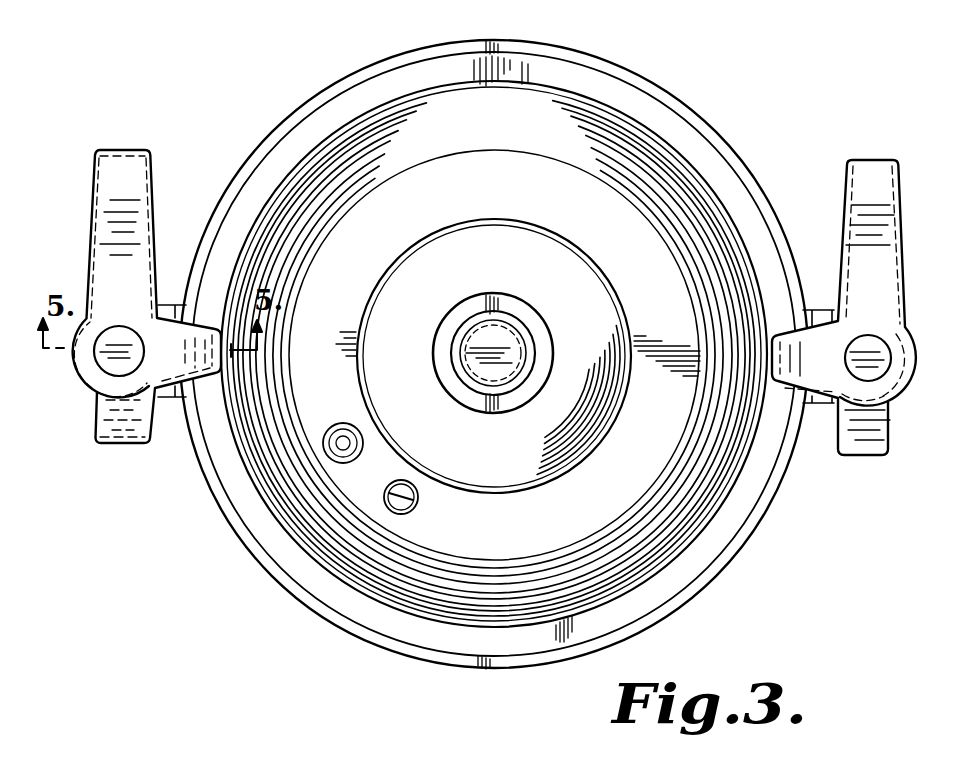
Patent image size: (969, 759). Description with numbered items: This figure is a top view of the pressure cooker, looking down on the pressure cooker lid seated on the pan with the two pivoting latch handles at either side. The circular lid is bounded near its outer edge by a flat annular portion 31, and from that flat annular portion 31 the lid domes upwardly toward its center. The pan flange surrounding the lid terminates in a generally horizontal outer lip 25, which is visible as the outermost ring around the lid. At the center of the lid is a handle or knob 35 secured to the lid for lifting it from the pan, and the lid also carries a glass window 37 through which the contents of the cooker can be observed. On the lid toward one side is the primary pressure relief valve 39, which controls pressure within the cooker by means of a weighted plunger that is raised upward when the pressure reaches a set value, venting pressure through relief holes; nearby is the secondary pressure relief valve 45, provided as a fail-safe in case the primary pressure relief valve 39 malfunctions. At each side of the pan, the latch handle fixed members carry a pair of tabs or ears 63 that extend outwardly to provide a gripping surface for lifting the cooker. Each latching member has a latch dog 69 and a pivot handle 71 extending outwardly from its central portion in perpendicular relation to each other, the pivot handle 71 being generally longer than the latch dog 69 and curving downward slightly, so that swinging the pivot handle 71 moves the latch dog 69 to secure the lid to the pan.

The outer lip 25 is at (640, 72).
The flat annular portion 31 is at (684, 132).
The glass window 37 is at (541, 246).
The handle or knob 35 is at (522, 303).
The primary pressure relief valve 39 is at (336, 466).
The secondary pressure relief valve 45 is at (418, 503).
The tabs or ears 63 is at (92, 432).
The latch dog 69 is at (175, 400).
The pivot handle 71 is at (126, 148).